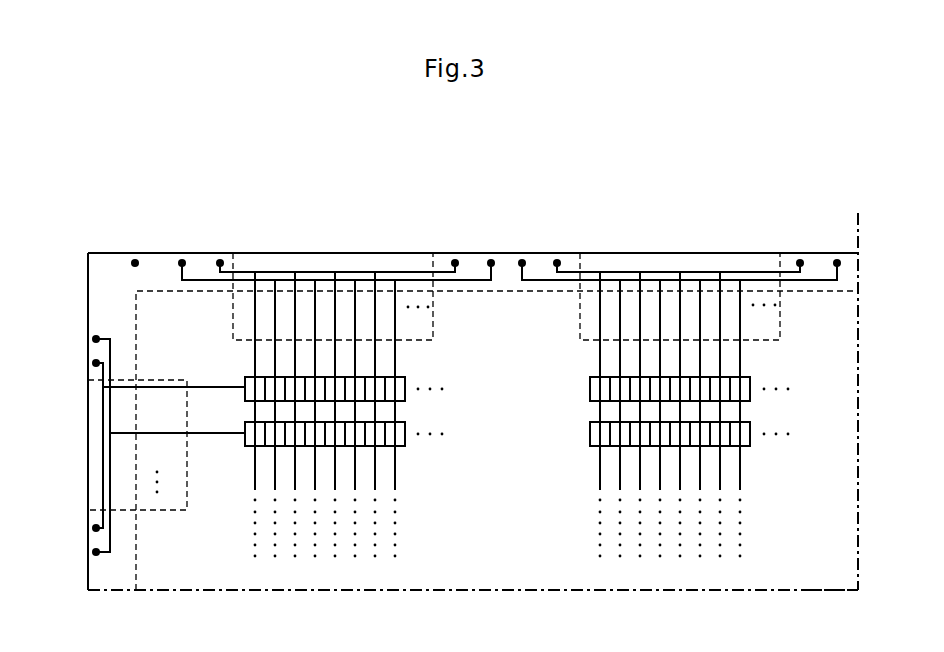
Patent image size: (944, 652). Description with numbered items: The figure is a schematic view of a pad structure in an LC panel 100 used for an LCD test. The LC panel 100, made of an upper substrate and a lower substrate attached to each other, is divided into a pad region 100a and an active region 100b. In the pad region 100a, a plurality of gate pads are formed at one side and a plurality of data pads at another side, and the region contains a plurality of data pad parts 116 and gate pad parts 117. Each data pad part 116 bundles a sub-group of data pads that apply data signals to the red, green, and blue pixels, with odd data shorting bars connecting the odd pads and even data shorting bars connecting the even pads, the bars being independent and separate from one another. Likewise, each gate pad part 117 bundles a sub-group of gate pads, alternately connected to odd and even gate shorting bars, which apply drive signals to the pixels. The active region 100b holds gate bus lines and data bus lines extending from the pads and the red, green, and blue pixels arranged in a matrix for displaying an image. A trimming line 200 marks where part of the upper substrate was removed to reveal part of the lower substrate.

The LC panel 100 is at (524, 182).
The pad region 100a is at (98, 303).
The active region 100b is at (828, 580).
The data pad part 116 is at (431, 302).
The gate pad part 117 is at (127, 510).
The trimming line 200 is at (137, 530).